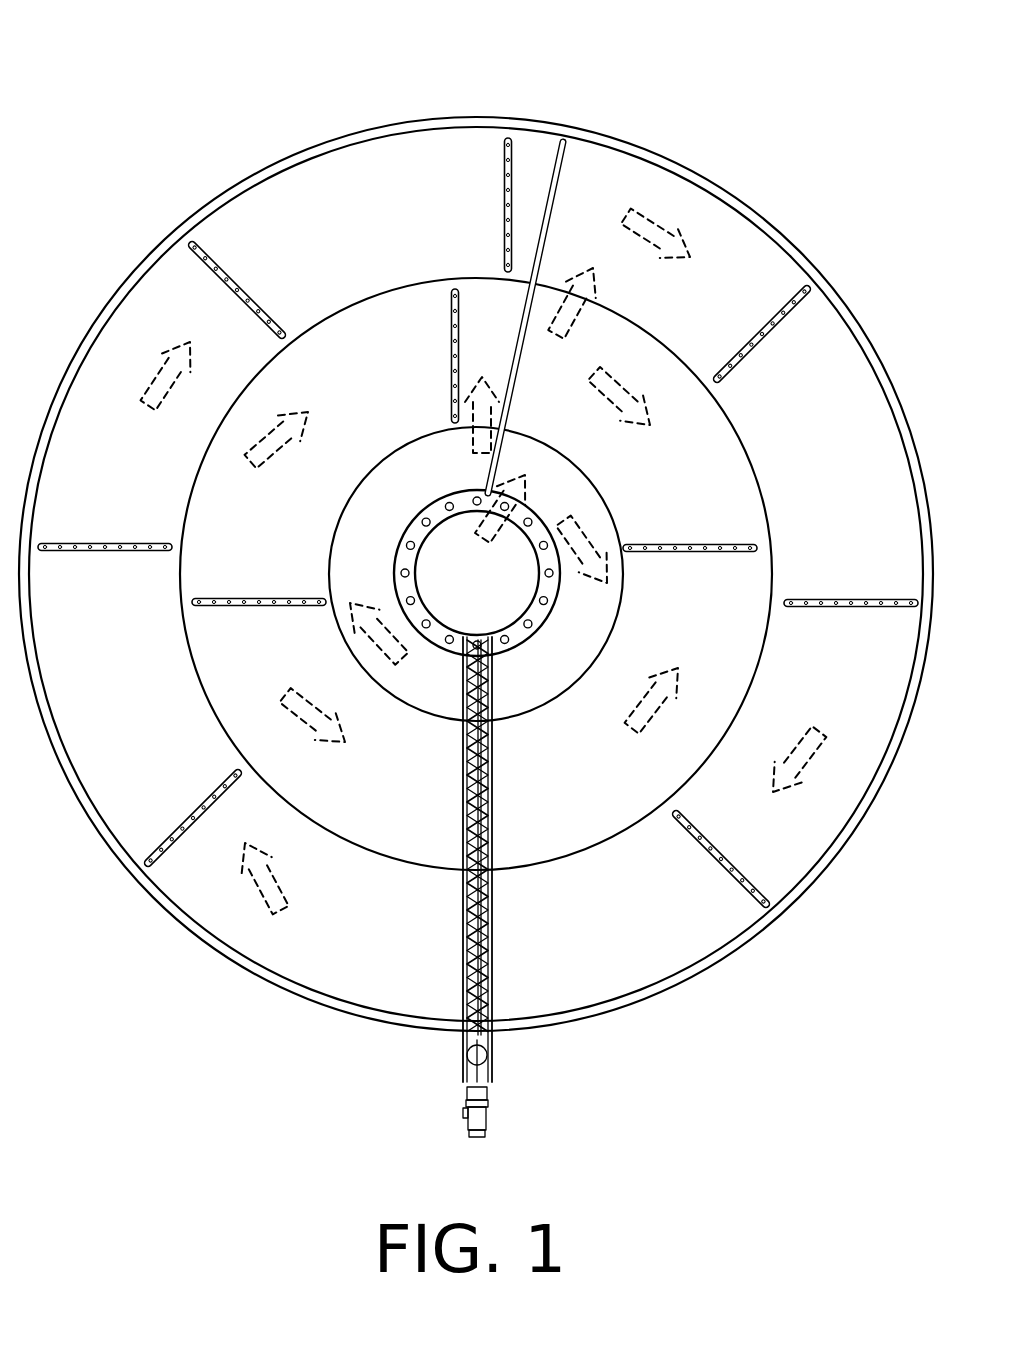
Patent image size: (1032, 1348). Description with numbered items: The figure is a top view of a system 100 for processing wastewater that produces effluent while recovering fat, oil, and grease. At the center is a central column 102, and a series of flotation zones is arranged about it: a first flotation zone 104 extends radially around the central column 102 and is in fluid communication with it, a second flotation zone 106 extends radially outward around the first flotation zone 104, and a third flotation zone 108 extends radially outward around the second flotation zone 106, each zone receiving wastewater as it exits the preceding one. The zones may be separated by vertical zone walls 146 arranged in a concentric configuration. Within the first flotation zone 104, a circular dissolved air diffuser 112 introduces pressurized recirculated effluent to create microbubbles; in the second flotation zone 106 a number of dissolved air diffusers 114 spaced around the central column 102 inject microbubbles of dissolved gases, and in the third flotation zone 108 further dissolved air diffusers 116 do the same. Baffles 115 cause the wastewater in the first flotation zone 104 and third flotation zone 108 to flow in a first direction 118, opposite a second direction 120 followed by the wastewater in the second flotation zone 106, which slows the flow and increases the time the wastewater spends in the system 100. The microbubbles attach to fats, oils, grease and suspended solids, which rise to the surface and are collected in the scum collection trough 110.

The system 100 is at (648, 47).
The central column 102 is at (503, 620).
The first flotation zone 104 is at (565, 690).
The second flotation zone 106 is at (430, 813).
The third flotation zone 108 is at (618, 935).
The scum collection trough 110 is at (450, 1061).
The dissolved air diffuser 112 is at (402, 589).
The dissolved air diffusers 114 is at (446, 317).
The baffles 115 is at (566, 205).
The dissolved air diffusers 116 is at (496, 205).
The first direction 118 is at (650, 267).
The second direction 120 is at (606, 417).
The vertical zone walls 146 is at (787, 225).